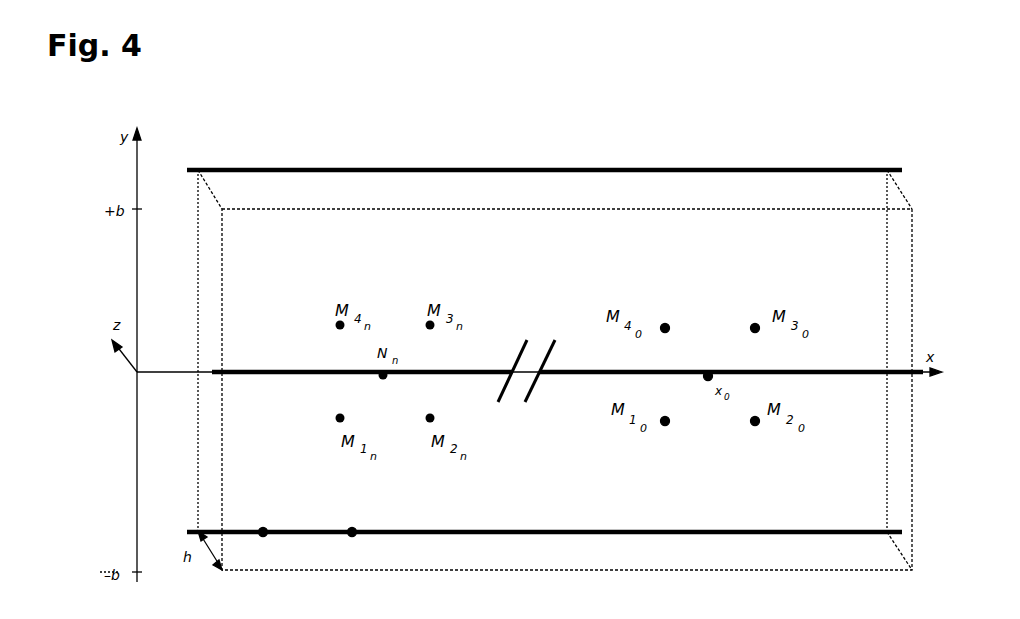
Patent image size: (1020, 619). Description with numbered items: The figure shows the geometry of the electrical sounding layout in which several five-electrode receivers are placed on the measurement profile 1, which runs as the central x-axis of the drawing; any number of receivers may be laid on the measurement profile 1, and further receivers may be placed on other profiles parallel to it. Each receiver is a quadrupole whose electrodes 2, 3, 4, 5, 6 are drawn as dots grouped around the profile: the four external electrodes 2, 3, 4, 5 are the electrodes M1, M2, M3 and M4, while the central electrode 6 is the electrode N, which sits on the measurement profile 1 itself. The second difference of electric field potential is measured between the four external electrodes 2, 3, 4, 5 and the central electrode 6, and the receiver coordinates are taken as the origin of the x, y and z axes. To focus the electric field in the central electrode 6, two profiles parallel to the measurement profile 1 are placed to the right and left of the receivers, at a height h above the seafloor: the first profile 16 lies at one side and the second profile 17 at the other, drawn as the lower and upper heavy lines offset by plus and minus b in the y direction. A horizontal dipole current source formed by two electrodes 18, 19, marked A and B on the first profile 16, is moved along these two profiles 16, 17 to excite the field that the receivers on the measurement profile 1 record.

The measurement profile 1 is at (567, 260).
The electrode 2 is at (765, 250).
The electrode 3 is at (718, 509).
The electrode 4 is at (807, 509).
The electrode 5 is at (803, 226).
The central electrode 6 is at (712, 226).
The first profile 16 is at (544, 566).
The second profile 17 is at (544, 144).
The electrode 18 is at (378, 556).
The electrode 19 is at (292, 556).